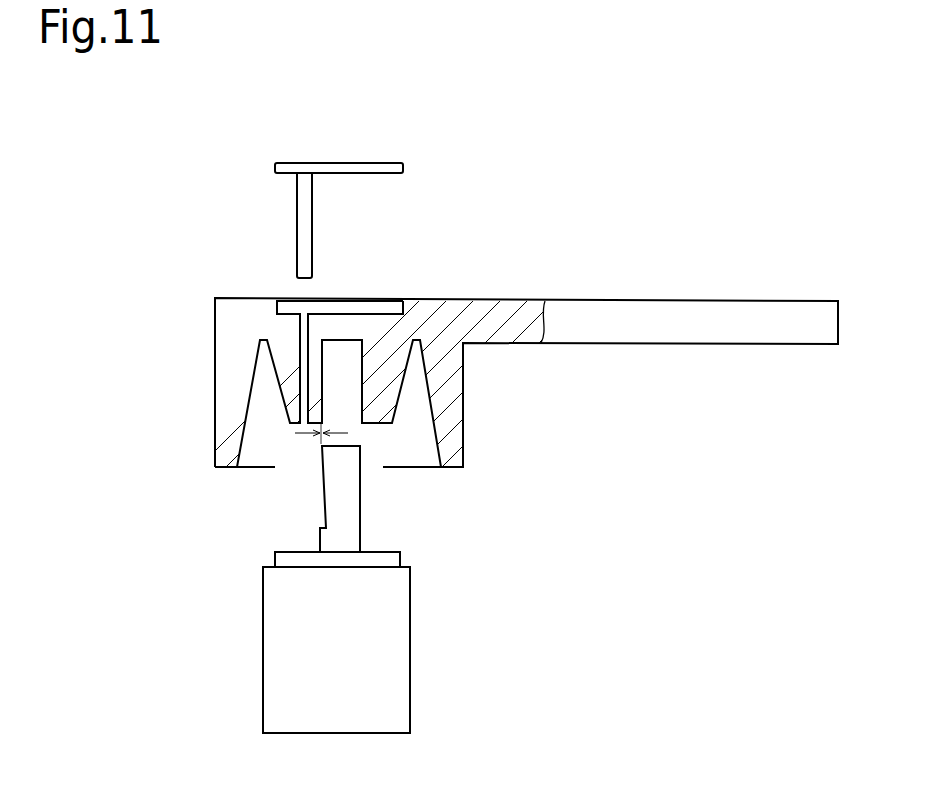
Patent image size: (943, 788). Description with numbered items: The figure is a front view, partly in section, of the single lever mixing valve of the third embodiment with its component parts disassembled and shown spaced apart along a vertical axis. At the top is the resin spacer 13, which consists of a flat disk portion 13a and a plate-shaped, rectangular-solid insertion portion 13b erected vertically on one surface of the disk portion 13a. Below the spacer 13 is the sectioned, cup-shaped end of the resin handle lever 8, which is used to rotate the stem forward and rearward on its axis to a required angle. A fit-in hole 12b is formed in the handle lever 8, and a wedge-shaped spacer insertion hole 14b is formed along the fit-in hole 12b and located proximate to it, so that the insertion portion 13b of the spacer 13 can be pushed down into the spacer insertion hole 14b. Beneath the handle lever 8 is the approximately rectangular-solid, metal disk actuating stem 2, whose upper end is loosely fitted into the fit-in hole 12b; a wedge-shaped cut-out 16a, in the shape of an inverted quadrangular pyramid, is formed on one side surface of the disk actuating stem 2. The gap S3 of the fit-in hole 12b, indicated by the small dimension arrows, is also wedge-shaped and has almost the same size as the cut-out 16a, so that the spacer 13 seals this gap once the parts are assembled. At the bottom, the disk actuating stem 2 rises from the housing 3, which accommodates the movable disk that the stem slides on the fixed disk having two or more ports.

The disk actuating stem 2 is at (348, 498).
The housing 3 is at (393, 667).
The handle lever 8 is at (688, 323).
The fit-in hole 12b is at (358, 373).
The spacer 13 is at (302, 183).
The disk portion 13a is at (336, 165).
The insertion portion 13b is at (297, 220).
The spacer insertion hole 14b is at (303, 352).
The cut-out 16a is at (322, 513).
The gap S3 is at (320, 444).